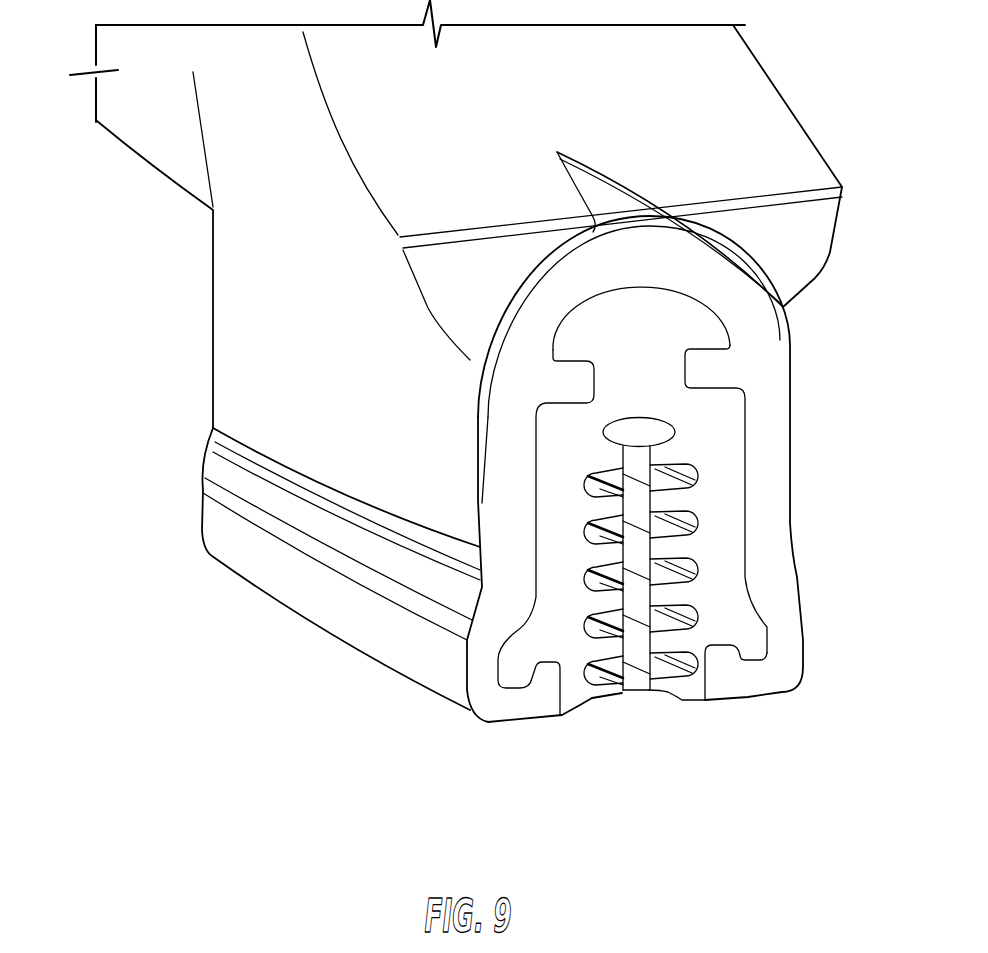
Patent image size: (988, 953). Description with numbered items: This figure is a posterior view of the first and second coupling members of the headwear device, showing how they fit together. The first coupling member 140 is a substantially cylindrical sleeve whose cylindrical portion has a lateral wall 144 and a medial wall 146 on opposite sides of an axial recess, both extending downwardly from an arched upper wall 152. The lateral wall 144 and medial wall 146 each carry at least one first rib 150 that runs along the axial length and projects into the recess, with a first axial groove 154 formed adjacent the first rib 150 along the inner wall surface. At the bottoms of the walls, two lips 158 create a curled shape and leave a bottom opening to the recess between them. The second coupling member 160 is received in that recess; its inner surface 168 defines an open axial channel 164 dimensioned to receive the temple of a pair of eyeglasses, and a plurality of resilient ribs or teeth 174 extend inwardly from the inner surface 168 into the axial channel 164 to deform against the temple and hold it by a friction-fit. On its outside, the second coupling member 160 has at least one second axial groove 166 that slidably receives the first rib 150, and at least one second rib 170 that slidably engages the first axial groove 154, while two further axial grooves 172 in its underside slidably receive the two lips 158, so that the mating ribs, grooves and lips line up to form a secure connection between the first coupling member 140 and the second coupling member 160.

The first coupling member 140 is at (205, 320).
The lateral wall 144 is at (788, 480).
The medial wall 146 is at (335, 433).
The first rib 150 is at (723, 357).
The upper wall 152 is at (688, 260).
The first axial groove 154 is at (758, 645).
The lip 158 is at (737, 675).
The second coupling member 160 is at (496, 733).
The axial channel 164 is at (643, 706).
The second axial groove 166 is at (716, 378).
The inner surface 168 is at (683, 520).
The second rib 170 is at (505, 677).
The further axial groove 172 is at (547, 668).
The resilient ribs or teeth 174 is at (678, 593).